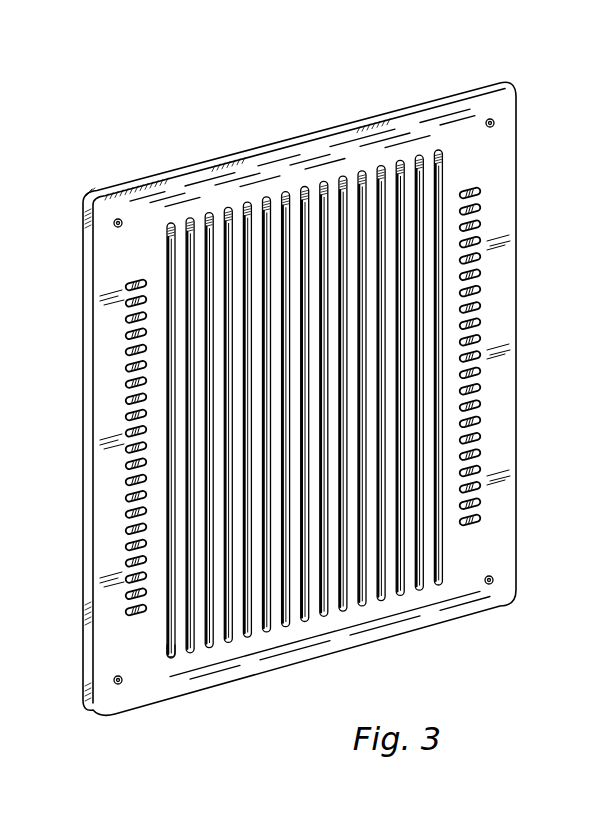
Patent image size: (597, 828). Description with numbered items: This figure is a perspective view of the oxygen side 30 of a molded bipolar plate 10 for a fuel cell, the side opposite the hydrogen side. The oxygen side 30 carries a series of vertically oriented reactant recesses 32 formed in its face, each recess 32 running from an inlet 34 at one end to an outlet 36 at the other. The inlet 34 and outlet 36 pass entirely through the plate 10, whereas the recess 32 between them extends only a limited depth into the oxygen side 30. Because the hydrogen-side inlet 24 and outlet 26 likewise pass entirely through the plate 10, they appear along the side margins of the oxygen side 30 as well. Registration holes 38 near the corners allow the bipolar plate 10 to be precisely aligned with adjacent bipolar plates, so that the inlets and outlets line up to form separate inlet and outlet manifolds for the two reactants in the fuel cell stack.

The bipolar plate 10 is at (270, 121).
The oxygen side 30 is at (137, 234).
The reactant recesses 32 is at (165, 272).
The inlet 34 is at (176, 220).
The outlet 36 is at (170, 649).
The inlet 24 is at (472, 522).
The outlet 26 is at (132, 612).
The registration holes 38 is at (118, 687).